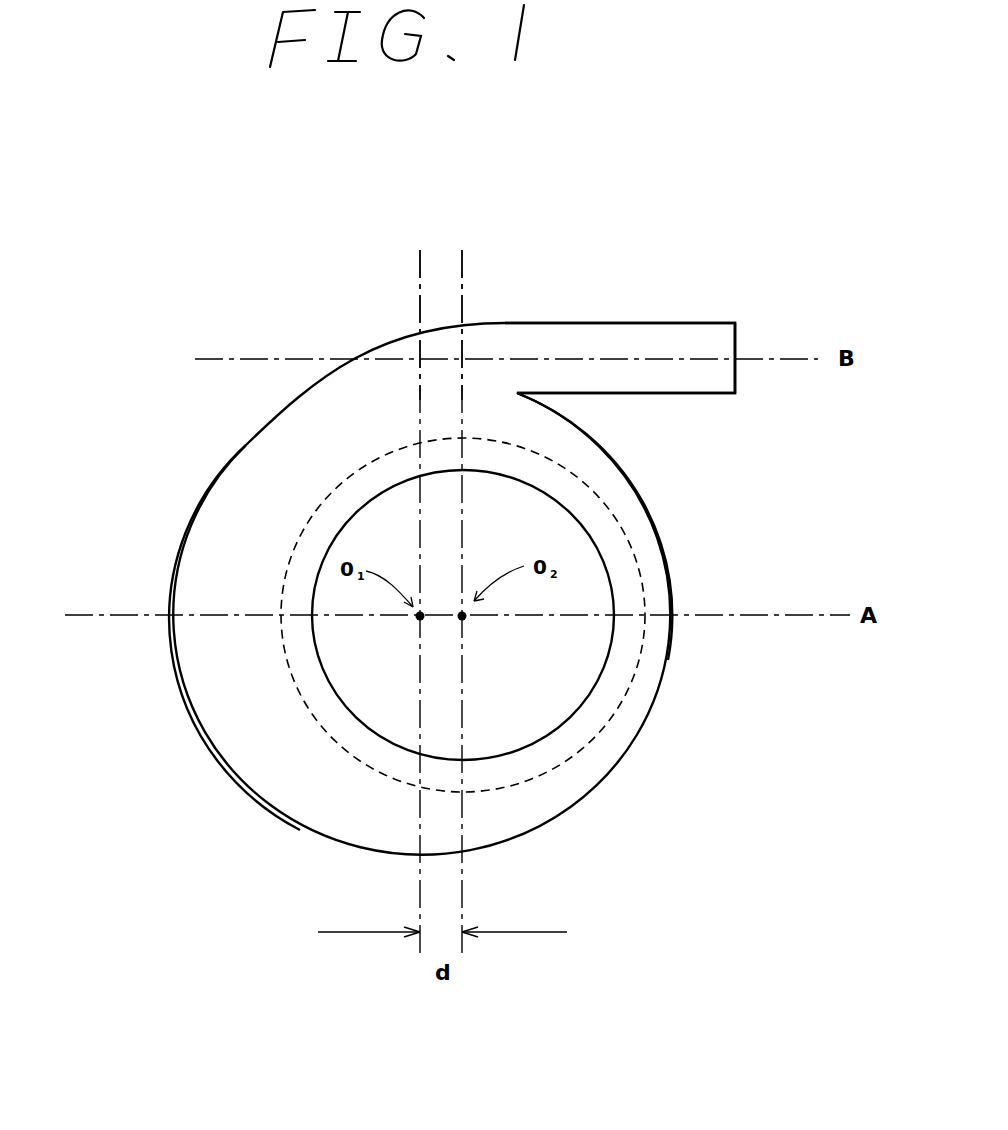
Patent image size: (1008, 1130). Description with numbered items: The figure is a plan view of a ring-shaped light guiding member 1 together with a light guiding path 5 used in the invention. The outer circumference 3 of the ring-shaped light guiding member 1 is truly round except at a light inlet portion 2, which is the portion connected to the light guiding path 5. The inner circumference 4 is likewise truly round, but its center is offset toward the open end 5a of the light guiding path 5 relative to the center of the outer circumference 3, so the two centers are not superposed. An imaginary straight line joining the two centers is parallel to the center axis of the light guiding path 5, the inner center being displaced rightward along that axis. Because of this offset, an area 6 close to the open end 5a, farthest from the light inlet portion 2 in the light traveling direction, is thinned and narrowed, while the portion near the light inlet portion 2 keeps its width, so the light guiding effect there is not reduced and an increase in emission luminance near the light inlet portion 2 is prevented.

The ring-shaped light guiding member 1 is at (228, 500).
The light inlet portion 2 is at (462, 278).
The outer circumference 3 is at (182, 548).
The inner circumference 4 is at (521, 745).
The light guiding path 5 is at (630, 321).
The open end 5a is at (738, 377).
The area 6 is at (607, 428).